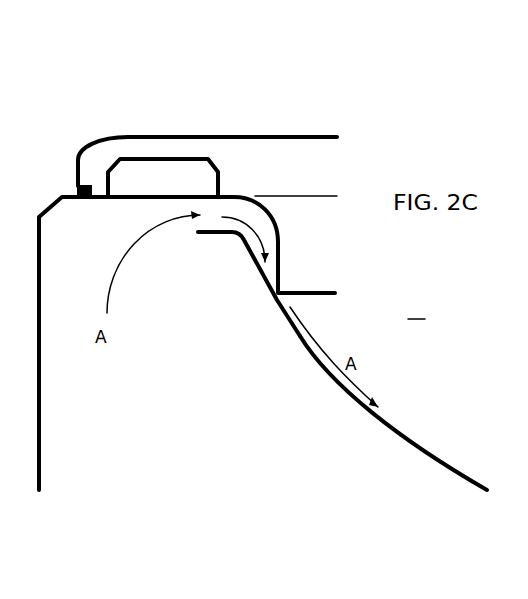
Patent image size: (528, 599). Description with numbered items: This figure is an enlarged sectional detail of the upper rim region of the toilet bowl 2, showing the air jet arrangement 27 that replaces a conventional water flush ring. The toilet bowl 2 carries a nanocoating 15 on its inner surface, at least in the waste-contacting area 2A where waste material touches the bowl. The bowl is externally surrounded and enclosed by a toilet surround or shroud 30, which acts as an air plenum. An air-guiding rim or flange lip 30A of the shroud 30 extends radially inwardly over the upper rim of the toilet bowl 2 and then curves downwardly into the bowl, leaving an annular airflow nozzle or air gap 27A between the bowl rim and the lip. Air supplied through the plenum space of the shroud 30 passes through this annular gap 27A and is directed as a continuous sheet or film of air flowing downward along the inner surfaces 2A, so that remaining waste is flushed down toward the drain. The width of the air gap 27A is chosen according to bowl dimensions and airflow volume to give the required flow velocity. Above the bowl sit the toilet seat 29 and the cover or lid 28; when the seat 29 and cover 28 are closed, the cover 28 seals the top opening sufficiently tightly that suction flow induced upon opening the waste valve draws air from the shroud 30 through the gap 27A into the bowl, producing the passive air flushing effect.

The toilet bowl 2 is at (416, 308).
The waste-contacting area 2A is at (380, 418).
The nanocoating 15 is at (425, 453).
The air jet arrangement 27 is at (225, 250).
The annular airflow nozzle or air gap 27A is at (268, 278).
The cover or lid 28 is at (147, 135).
The toilet seat 29 is at (162, 172).
The toilet surround or shroud 30 is at (39, 393).
The air-guiding rim or flange lip 30A is at (278, 248).